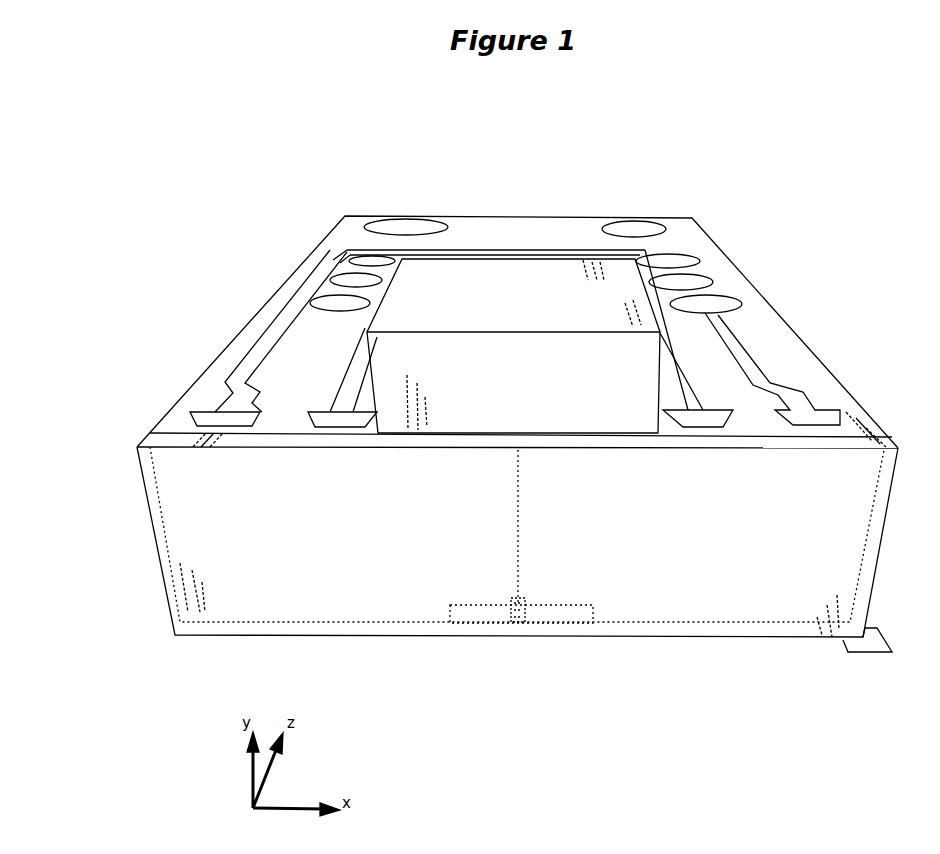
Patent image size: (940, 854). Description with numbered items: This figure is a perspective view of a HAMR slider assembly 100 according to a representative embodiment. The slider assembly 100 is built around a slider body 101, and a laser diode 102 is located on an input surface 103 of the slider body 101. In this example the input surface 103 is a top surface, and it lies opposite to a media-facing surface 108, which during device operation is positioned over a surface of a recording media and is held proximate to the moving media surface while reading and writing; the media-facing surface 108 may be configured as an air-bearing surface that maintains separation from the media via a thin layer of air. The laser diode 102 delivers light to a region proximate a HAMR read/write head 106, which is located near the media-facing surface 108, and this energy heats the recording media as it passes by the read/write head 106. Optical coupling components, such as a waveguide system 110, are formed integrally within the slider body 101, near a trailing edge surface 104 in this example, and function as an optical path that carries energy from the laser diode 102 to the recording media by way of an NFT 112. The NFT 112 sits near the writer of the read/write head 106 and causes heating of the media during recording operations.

The HAMR slider assembly 100 is at (702, 166).
The slider body 101 is at (322, 245).
The laser diode 102 is at (472, 268).
The input surface 103 is at (203, 393).
The trailing edge surface 104 is at (235, 612).
The HAMR read/write head 106 is at (528, 622).
The media-facing surface 108 is at (880, 660).
The waveguide system 110 is at (518, 518).
The NFT 112 is at (522, 625).